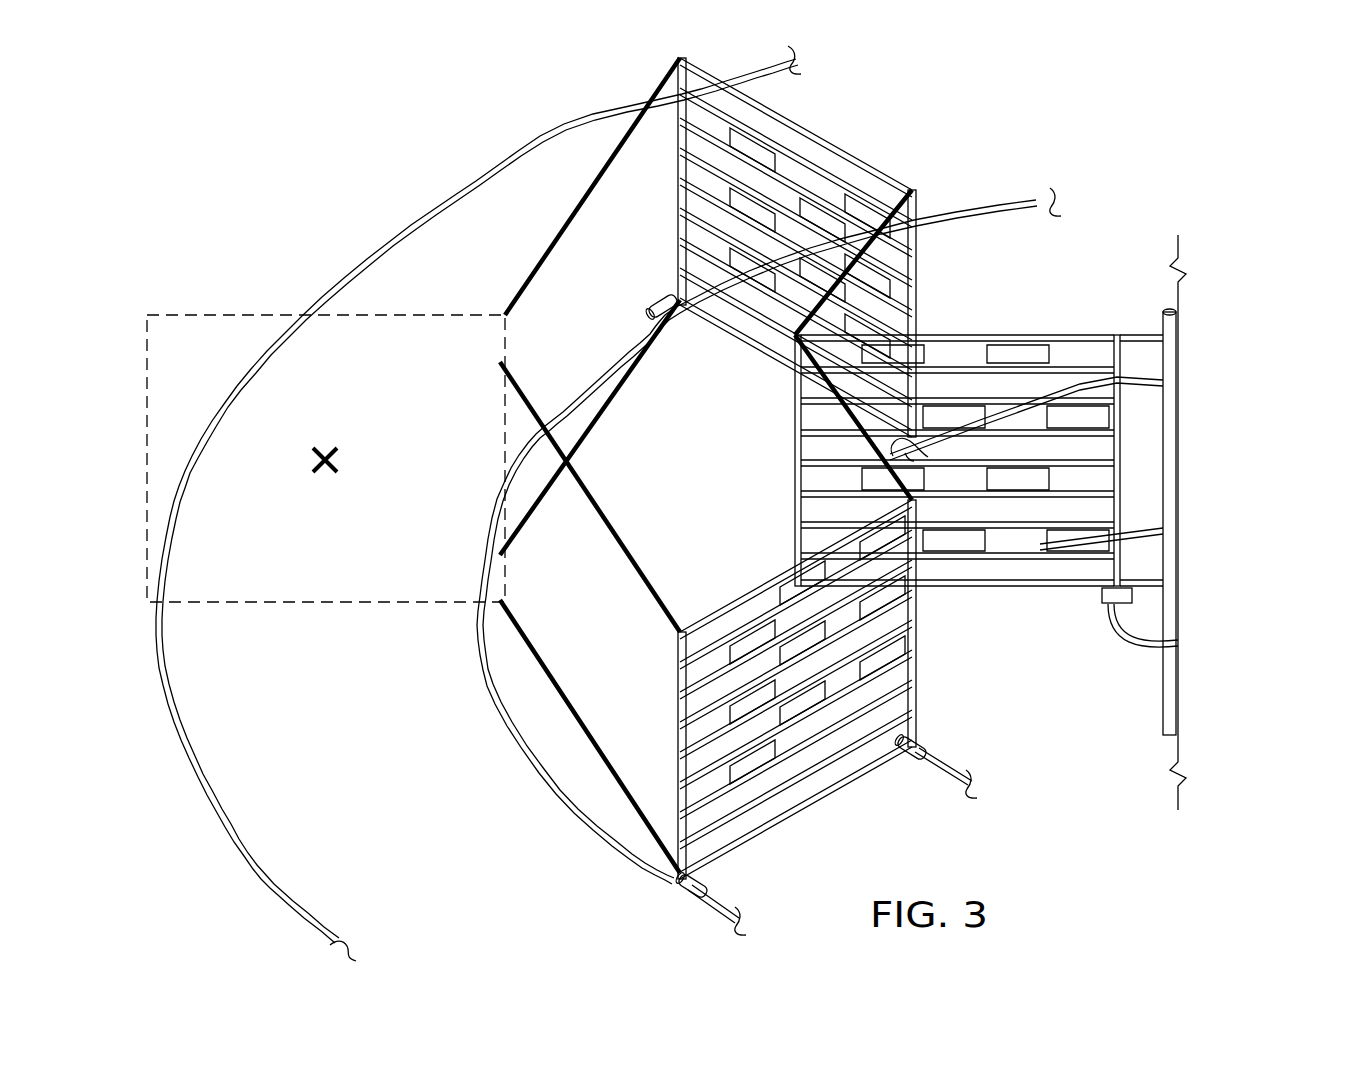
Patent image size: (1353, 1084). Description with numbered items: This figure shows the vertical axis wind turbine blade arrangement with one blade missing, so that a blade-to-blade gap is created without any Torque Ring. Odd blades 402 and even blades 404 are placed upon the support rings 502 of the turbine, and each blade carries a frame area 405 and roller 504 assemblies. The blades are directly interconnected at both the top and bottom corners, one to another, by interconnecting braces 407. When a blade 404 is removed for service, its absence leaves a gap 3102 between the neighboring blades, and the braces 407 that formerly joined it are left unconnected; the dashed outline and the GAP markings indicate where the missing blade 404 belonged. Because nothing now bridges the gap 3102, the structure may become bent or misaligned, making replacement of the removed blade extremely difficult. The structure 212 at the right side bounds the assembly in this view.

The wall 212 is at (1160, 488).
The odd blade 402 is at (735, 598).
The even blade 404 is at (825, 135).
The frame area 405 is at (1140, 333).
The interconnecting brace 407 is at (878, 208).
The support ring 502 is at (257, 865).
The roller 504 is at (658, 303).
The gap 3102 is at (433, 342).